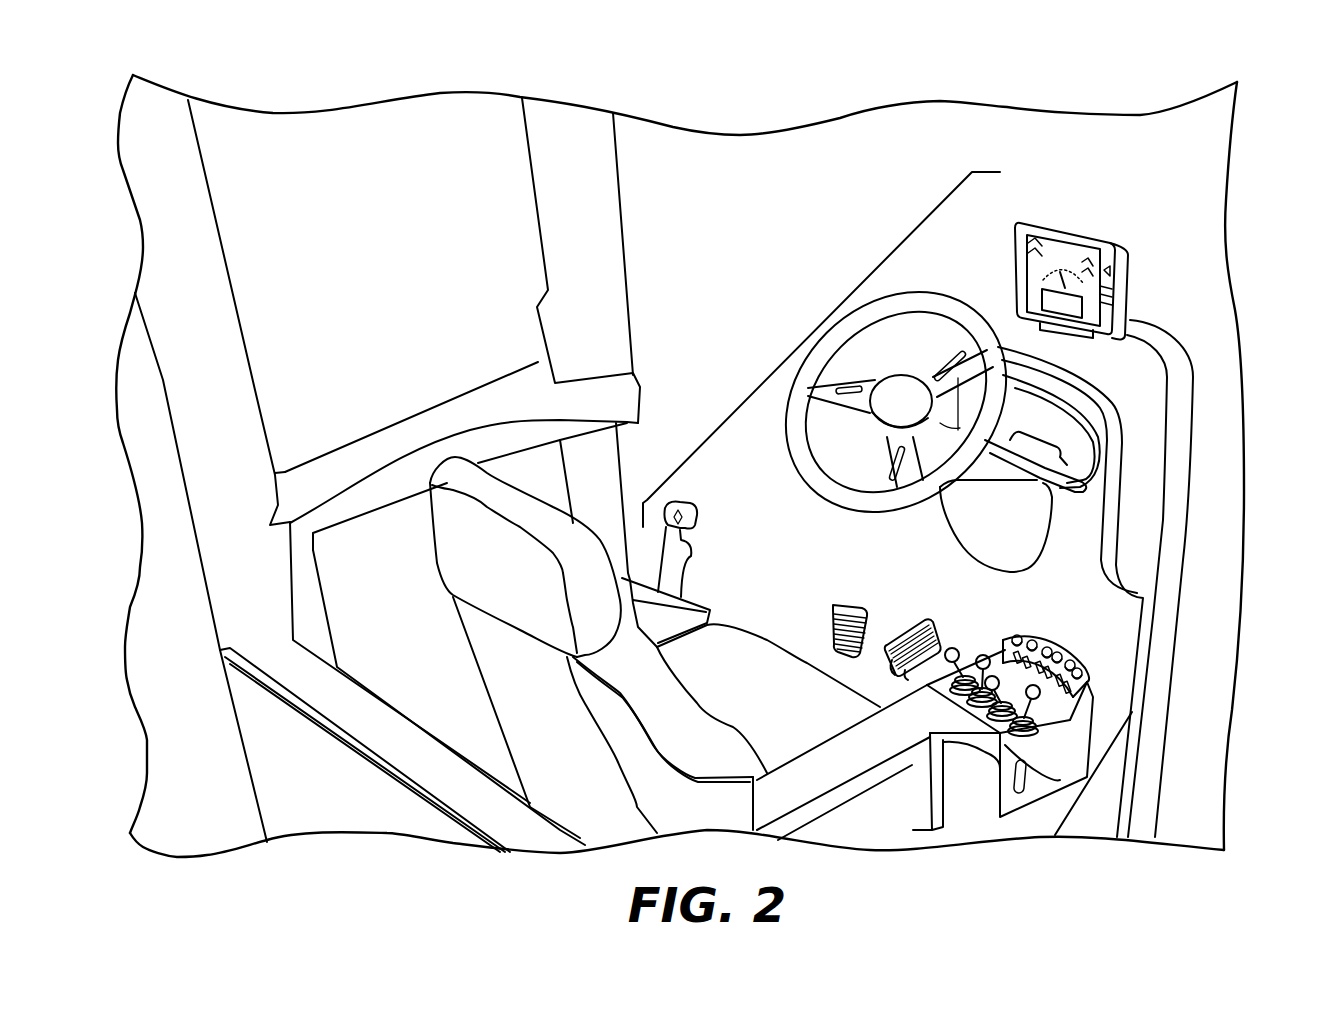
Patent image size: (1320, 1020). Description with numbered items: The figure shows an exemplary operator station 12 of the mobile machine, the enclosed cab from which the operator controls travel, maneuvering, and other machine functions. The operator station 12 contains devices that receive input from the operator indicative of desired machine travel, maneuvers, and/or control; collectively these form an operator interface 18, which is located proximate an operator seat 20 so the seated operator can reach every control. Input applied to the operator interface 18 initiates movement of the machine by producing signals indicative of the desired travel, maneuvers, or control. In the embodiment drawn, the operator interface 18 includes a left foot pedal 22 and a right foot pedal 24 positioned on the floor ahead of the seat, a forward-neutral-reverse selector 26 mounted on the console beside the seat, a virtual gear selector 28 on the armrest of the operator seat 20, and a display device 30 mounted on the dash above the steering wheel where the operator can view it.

The operator station 12 is at (1199, 159).
The operator interface 18 is at (807, 338).
The operator seat 20 is at (573, 525).
The left foot pedal 22 is at (835, 603).
The right foot pedal 24 is at (895, 633).
The forward-neutral-reverse (FNR) selector 26 is at (958, 650).
The virtual gear selector 28 is at (687, 503).
The display device 30 is at (1092, 225).